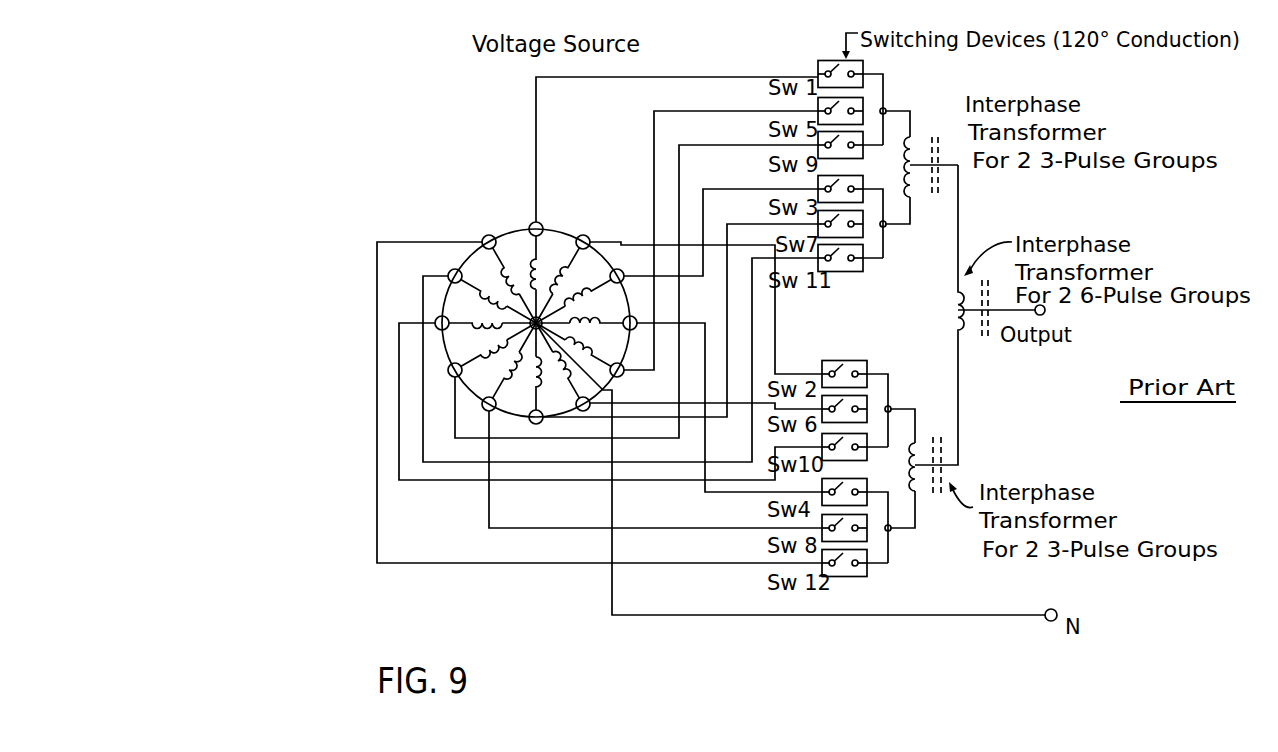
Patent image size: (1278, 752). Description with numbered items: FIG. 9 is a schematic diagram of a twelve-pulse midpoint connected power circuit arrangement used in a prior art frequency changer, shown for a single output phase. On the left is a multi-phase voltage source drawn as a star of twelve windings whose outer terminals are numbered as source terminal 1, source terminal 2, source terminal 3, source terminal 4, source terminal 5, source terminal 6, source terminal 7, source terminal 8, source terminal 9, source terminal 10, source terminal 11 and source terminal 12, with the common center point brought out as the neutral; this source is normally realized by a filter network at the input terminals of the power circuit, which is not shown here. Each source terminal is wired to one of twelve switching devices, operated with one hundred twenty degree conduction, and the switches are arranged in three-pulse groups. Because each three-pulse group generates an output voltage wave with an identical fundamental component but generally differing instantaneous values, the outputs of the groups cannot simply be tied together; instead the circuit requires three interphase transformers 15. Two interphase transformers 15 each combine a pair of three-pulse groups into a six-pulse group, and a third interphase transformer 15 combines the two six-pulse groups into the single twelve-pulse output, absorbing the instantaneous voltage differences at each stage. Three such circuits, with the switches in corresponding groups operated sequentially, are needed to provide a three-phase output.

The interphase transformer 15 is at (912, 196).
The voltage source phase terminal 1 is at (545, 220).
The voltage source phase terminal 2 is at (589, 231).
The voltage source phase terminal 3 is at (627, 288).
The voltage source phase terminal 4 is at (635, 337).
The voltage source phase terminal 5 is at (624, 380).
The voltage source phase terminal 6 is at (593, 410).
The voltage source phase terminal 7 is at (547, 425).
The voltage source phase terminal 8 is at (498, 417).
The voltage source phase terminal 9 is at (459, 390).
The voltage source phase terminal 10 is at (436, 340).
The voltage source phase terminal 11 is at (444, 288).
The voltage source phase terminal 12 is at (478, 231).